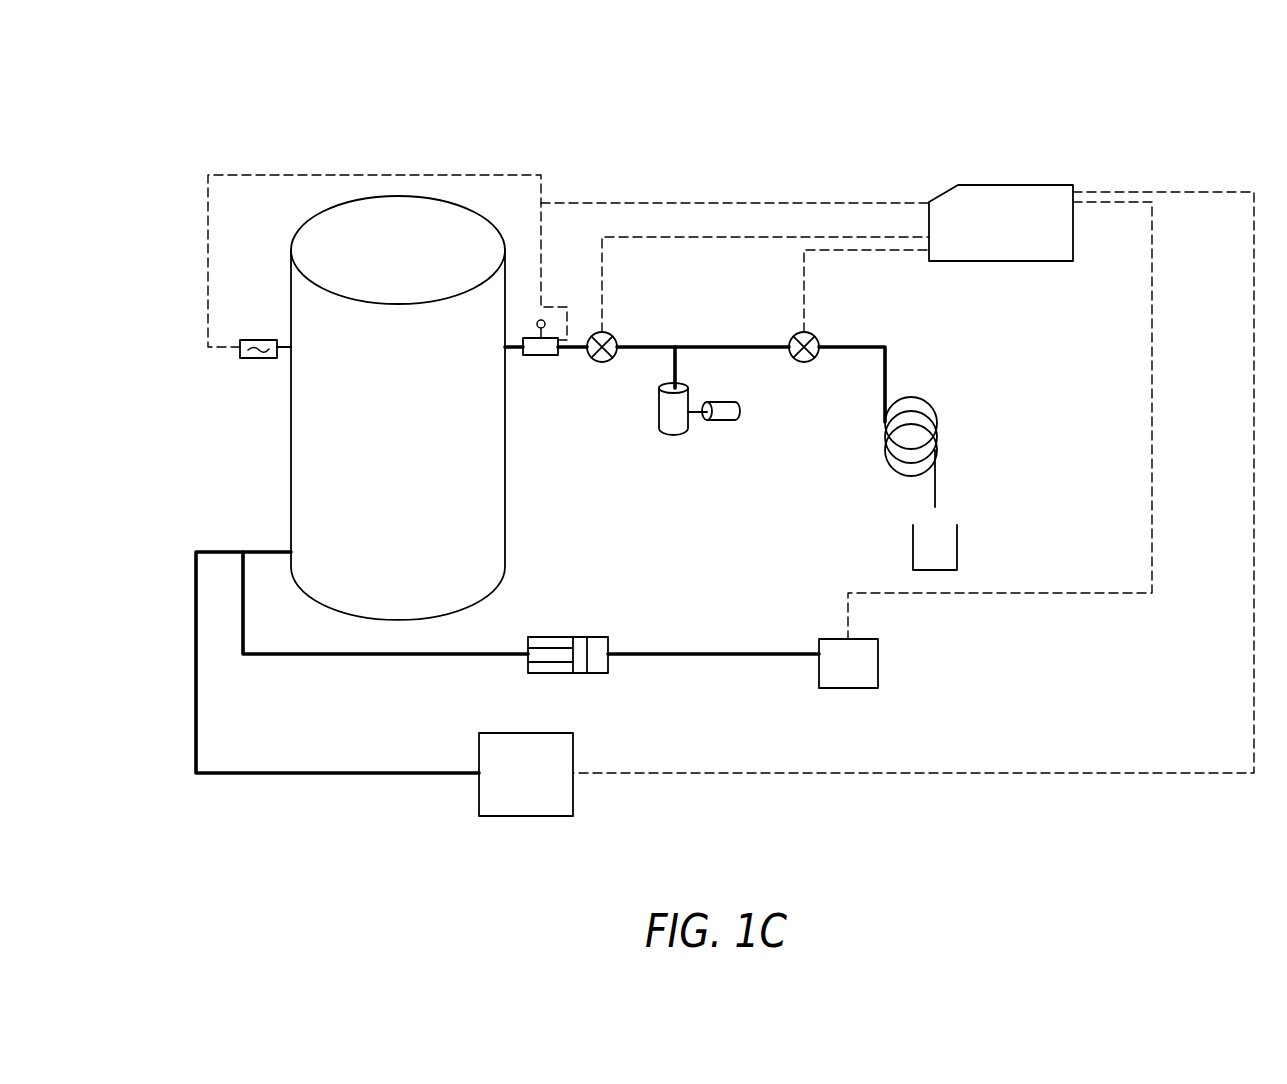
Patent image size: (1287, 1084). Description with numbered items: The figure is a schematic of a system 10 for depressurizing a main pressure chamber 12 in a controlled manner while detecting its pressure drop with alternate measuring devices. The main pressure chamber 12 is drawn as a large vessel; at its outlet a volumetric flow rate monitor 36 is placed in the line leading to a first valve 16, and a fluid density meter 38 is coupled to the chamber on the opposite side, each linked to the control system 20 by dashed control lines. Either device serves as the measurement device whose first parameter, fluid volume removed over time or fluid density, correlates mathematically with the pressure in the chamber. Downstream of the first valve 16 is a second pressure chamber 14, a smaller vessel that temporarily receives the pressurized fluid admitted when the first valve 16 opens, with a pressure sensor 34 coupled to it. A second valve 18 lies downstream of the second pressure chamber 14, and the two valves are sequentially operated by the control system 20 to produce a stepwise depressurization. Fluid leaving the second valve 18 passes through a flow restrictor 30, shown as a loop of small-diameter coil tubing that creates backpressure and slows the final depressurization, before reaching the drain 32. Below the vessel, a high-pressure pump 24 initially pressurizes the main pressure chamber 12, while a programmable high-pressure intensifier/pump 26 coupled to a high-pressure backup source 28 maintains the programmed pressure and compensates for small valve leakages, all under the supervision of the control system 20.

The system 10 is at (262, 122).
The main pressure chamber 12 is at (291, 408).
The second pressure chamber 14 is at (672, 436).
The first valve 16 is at (602, 363).
The second valve 18 is at (804, 363).
The control system 20 is at (1016, 185).
The high-pressure pump 24 is at (573, 793).
The programmable high-pressure intensifier/pump 26 is at (592, 637).
The high-pressure backup source 28 is at (848, 688).
The flow restrictor 30 is at (922, 398).
The drain 32 is at (957, 562).
The pressure sensor 34 is at (721, 421).
The volumetric flow rate monitor 36 is at (541, 357).
The fluid density meter 38 is at (258, 360).